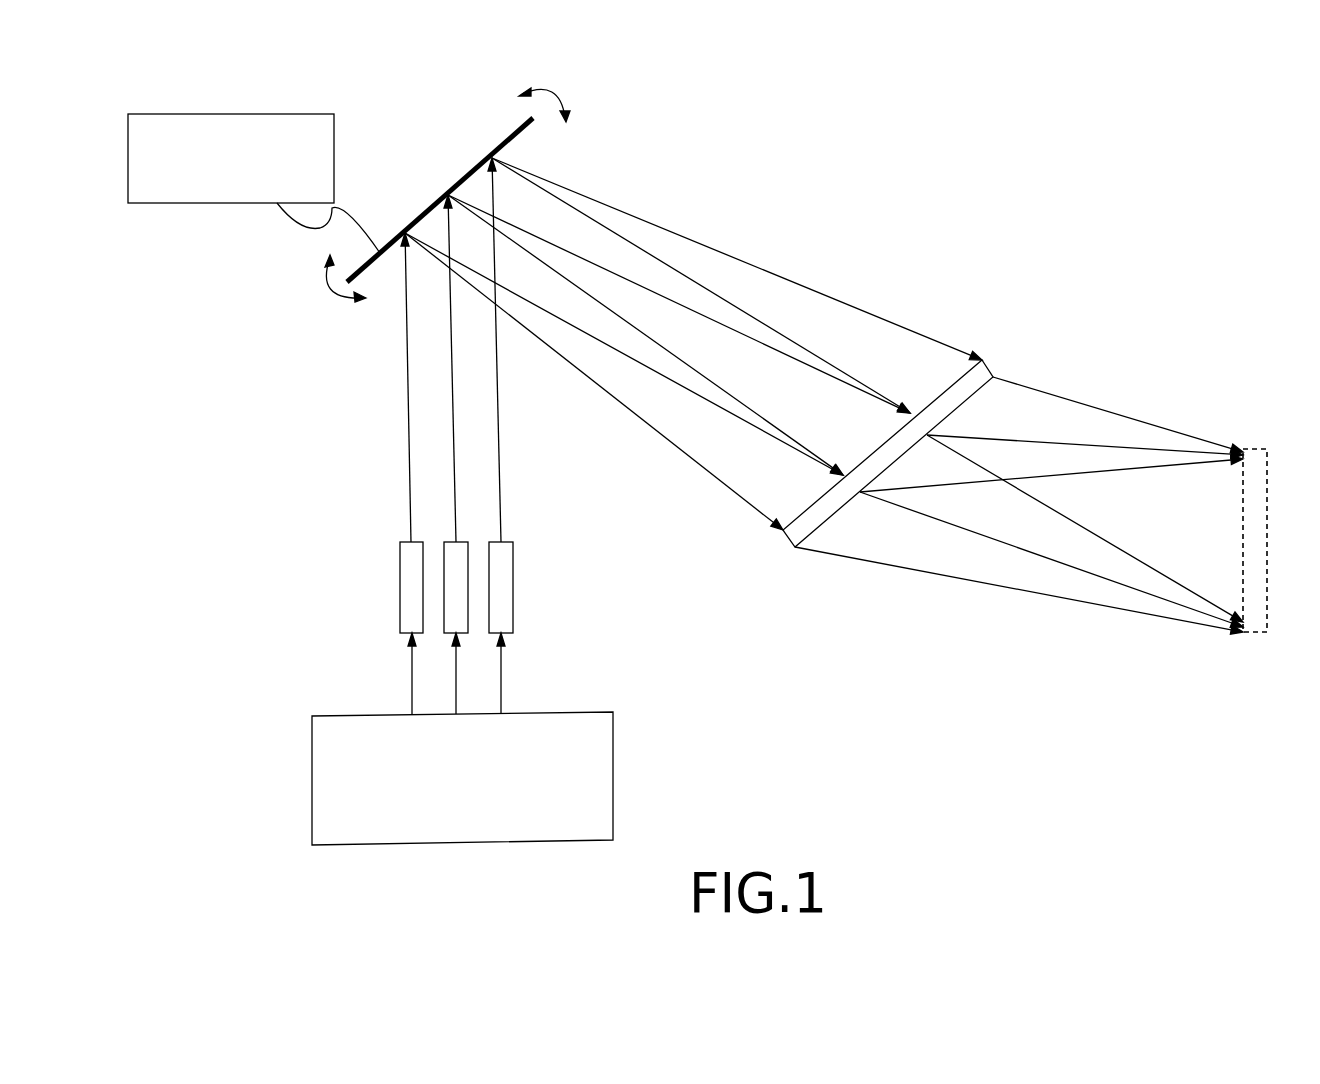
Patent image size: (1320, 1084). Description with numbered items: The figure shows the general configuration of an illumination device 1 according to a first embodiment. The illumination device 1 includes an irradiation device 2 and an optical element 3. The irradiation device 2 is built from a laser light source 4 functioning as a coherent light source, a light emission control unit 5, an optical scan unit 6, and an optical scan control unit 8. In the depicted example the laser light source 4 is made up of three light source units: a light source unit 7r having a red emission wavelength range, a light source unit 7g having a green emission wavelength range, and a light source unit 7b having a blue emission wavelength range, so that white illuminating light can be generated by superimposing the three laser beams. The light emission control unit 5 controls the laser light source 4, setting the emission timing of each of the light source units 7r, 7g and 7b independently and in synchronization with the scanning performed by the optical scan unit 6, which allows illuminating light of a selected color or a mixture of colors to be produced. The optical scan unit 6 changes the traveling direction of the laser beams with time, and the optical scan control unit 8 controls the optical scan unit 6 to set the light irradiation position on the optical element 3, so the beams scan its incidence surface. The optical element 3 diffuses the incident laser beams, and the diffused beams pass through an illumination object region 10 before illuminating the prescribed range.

The illumination device 1 is at (1120, 189).
The irradiation device 2 is at (304, 372).
The optical element 3 is at (988, 370).
The laser light source 4 is at (335, 577).
The light emission control unit 5 is at (312, 778).
The optical scan unit 6 is at (455, 183).
The light source unit having a red emission wavelength range 7r is at (410, 557).
The light source unit having a green emission wavelength range 7g is at (455, 587).
The light source unit having a blue emission wavelength range 7b is at (498, 613).
The optical scan control unit 8 is at (166, 204).
The illumination object region 10 is at (1252, 635).